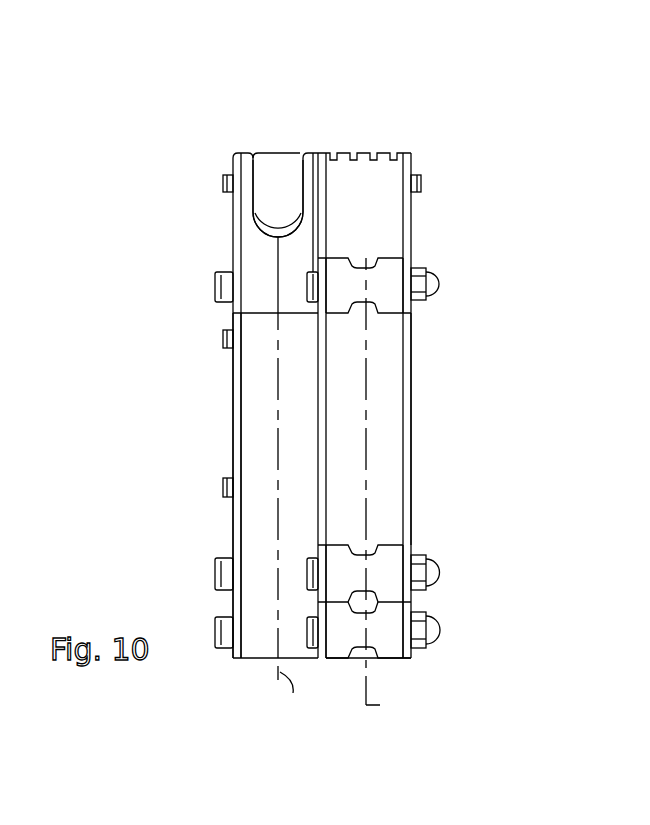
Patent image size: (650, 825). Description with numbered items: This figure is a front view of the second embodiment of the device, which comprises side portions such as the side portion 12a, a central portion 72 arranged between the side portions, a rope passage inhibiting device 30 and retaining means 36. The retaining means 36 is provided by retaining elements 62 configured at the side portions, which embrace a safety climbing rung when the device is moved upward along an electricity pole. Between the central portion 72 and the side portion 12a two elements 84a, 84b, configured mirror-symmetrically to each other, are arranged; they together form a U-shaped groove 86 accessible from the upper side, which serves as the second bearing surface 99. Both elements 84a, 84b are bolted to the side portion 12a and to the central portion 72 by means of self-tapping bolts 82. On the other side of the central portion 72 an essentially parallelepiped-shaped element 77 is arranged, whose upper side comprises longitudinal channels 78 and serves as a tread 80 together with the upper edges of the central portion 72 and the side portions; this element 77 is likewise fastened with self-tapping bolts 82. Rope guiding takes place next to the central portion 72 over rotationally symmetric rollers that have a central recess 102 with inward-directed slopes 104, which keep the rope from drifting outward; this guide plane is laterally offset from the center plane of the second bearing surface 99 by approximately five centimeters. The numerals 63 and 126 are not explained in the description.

The retaining element 62 is at (252, 152).
The retaining means 36 is at (312, 152).
The slot 63 is at (263, 108).
The second bearing surface 99 is at (274, 205).
The U-shaped groove 86 is at (278, 151).
The element 84a is at (253, 256).
The inner element 84b is at (287, 288).
The side portion 12a is at (233, 415).
The tread 80 is at (380, 126).
The longitudinal channels 78 is at (362, 148).
The slopes 104 is at (367, 261).
The parallelepiped-shaped element 77 is at (372, 225).
The recess 102 is at (365, 313).
The central portion 72 is at (322, 520).
The side rail 126 is at (411, 360).
The rope passage inhibiting device 30 is at (376, 421).
The self-tapping bolts 82 is at (221, 182).